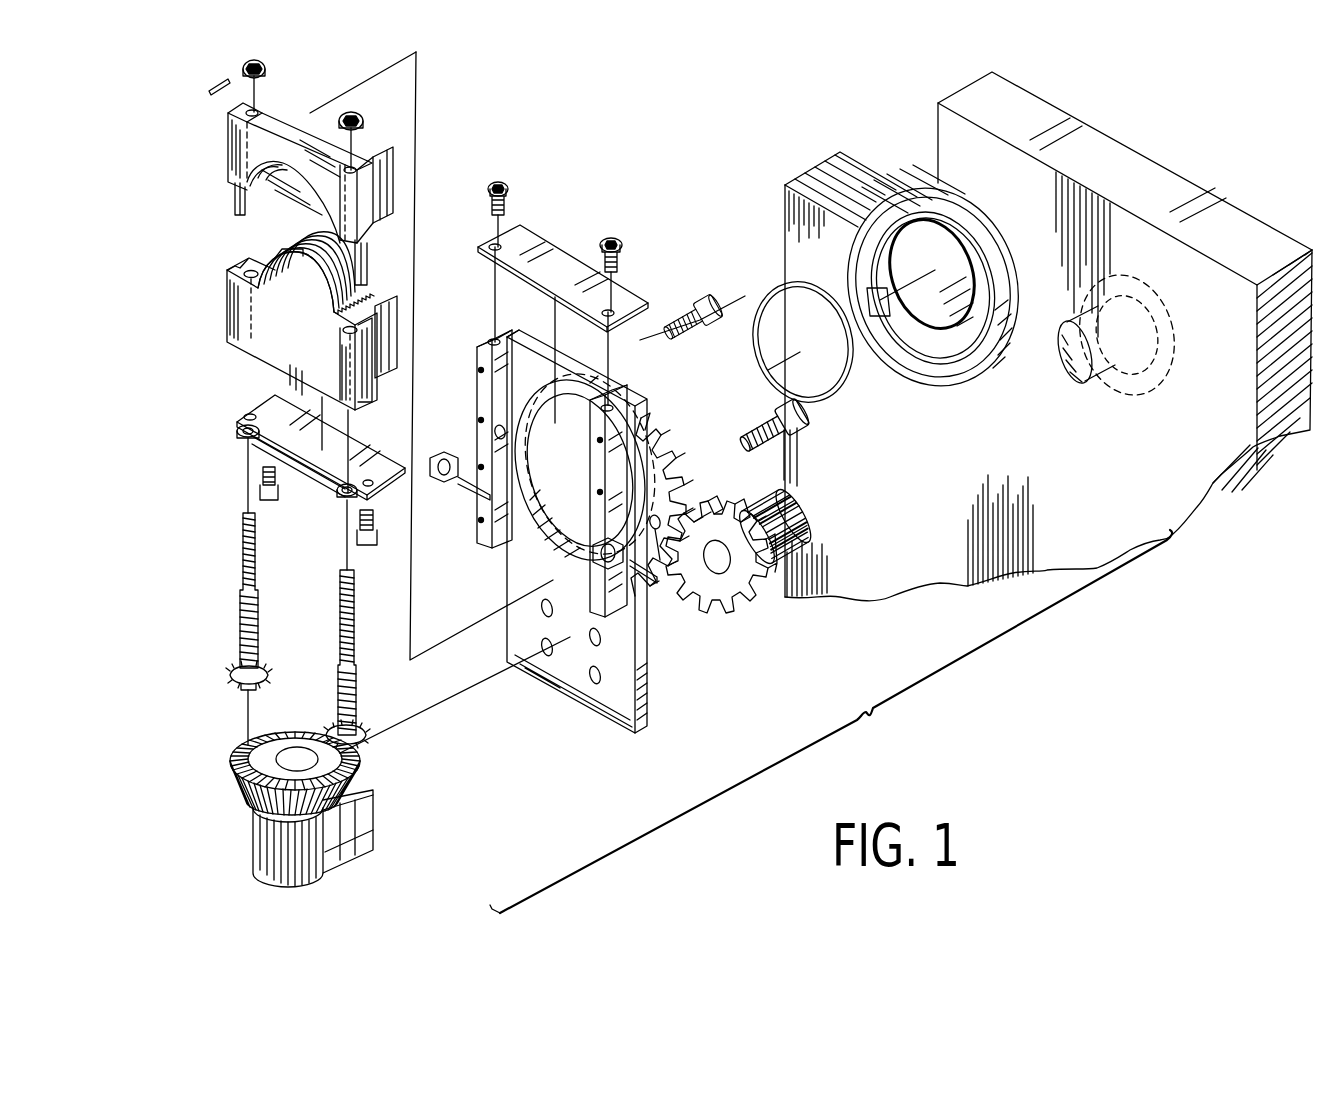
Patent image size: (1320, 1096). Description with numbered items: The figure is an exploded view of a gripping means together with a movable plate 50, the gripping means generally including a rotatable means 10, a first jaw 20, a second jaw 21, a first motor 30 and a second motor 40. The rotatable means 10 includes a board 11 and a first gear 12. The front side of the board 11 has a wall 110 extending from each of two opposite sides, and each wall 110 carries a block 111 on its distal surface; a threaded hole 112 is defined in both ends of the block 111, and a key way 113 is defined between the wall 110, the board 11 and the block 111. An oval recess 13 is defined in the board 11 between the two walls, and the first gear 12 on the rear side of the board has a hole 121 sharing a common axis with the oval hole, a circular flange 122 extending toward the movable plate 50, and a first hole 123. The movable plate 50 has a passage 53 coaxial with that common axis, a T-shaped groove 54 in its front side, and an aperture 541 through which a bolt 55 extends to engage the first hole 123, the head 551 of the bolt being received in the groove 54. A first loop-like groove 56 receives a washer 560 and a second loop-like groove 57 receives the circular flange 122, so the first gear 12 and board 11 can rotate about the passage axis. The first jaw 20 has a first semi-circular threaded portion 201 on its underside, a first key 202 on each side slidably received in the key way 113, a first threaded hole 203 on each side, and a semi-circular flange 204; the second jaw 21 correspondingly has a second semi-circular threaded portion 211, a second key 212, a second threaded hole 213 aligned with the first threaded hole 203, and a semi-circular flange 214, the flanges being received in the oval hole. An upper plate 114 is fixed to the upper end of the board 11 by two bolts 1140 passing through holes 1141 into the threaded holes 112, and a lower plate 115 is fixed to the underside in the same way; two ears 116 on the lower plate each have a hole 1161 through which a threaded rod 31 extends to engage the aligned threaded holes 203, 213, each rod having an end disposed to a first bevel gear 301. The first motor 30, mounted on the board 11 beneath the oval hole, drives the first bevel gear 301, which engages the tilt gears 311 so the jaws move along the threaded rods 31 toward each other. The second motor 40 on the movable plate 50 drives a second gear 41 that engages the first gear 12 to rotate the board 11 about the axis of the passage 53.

The rotatable means 10 is at (710, 207).
The board 11 is at (647, 700).
The first gear 12 is at (665, 478).
The oval recess 13 is at (510, 543).
The first jaw 20 is at (233, 152).
The second jaw 21 is at (277, 357).
The first motor 30 is at (322, 852).
The threaded rod 31 is at (240, 628).
The second motor 40 is at (810, 540).
The second gear 41 is at (743, 603).
The movable plate 50 is at (1037, 107).
The passage 53 is at (943, 310).
The groove 54 is at (875, 232).
The bolt 55 is at (777, 417).
The first loop-like groove 56 is at (897, 237).
The second loop-like groove 57 is at (888, 228).
The wall 110 is at (512, 330).
The block 111 is at (482, 393).
The threaded hole 112 is at (492, 340).
The key way 113 is at (517, 333).
The upper plate 114 is at (523, 237).
The lower plate 115 is at (327, 475).
The ear 116 is at (245, 436).
The hole 121 is at (575, 520).
The circular flange 122 is at (628, 371).
The first hole 123 is at (656, 535).
The first semi-circular threaded portion 201 is at (270, 187).
The first key 202 is at (393, 193).
The first threaded hole 203 is at (360, 130).
The semi-circular flange 204 is at (347, 132).
The second semi-circular threaded portion 211 is at (370, 292).
The second key 212 is at (394, 362).
The second threaded hole 213 is at (245, 268).
The semi-circular flange 214 is at (393, 304).
The first bevel gear 301 is at (248, 798).
The tilt gear 311 is at (235, 684).
The aperture 541 is at (870, 318).
The head 551 is at (805, 425).
The washer 560 is at (769, 290).
The bolt 1140 is at (500, 183).
The hole 1141 is at (605, 310).
The hole 1161 is at (237, 426).